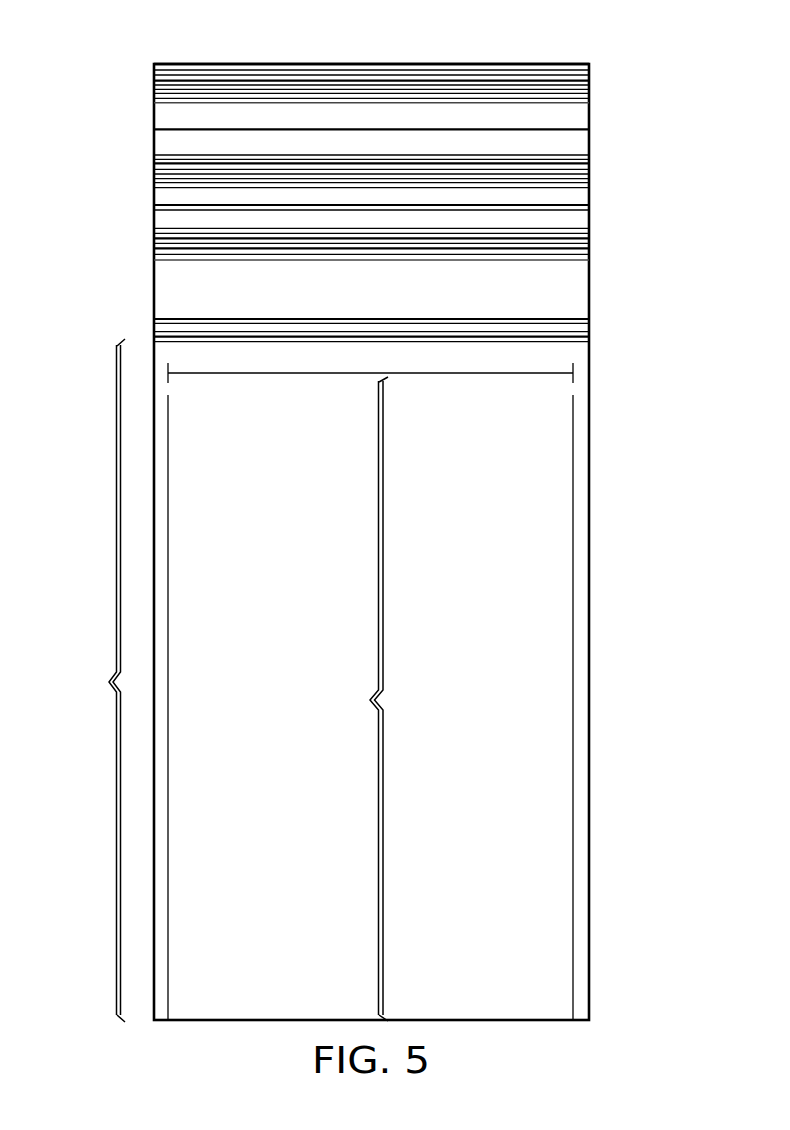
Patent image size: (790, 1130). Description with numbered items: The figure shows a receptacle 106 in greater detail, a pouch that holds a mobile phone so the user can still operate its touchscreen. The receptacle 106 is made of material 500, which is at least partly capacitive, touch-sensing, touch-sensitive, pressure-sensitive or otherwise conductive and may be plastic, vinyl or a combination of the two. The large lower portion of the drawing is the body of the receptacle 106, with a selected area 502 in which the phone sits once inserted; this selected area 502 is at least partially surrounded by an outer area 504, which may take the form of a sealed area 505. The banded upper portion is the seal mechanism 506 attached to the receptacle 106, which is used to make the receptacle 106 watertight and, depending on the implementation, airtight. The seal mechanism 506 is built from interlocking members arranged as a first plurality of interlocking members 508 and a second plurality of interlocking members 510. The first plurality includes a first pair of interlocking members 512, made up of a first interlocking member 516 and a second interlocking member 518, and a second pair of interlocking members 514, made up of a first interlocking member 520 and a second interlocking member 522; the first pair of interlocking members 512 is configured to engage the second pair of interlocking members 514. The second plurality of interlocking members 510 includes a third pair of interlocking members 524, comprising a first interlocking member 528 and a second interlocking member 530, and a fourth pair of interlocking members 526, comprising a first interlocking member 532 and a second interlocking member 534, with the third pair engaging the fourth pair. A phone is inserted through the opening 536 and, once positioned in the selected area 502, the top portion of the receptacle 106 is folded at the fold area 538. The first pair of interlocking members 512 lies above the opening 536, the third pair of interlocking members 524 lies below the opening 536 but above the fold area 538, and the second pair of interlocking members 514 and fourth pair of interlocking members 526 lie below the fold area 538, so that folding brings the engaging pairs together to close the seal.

The material 500 is at (604, 566).
The receptacle 106 is at (590, 64).
The selected area 502 is at (355, 699).
The outer area 504 is at (91, 680).
The sealed area 505 is at (580, 357).
The seal mechanism 506 is at (188, 64).
The first plurality of interlocking members 508 is at (295, 69).
The second plurality of interlocking members 510 is at (566, 225).
The first pair of interlocking members 512 is at (147, 84).
The second pair of interlocking members 514 is at (147, 325).
The first interlocking member 516 is at (423, 75).
The second interlocking member 518 is at (526, 97).
The first interlocking member 520 is at (360, 331).
The second interlocking member 522 is at (563, 317).
The third pair of interlocking members 524 is at (147, 169).
The fourth pair of interlocking members 526 is at (147, 243).
The first interlocking member 528 is at (563, 160).
The second interlocking member 530 is at (563, 187).
The first interlocking member 532 is at (176, 258).
The second interlocking member 534 is at (500, 238).
The opening 536 is at (566, 124).
The fold area 538 is at (160, 204).